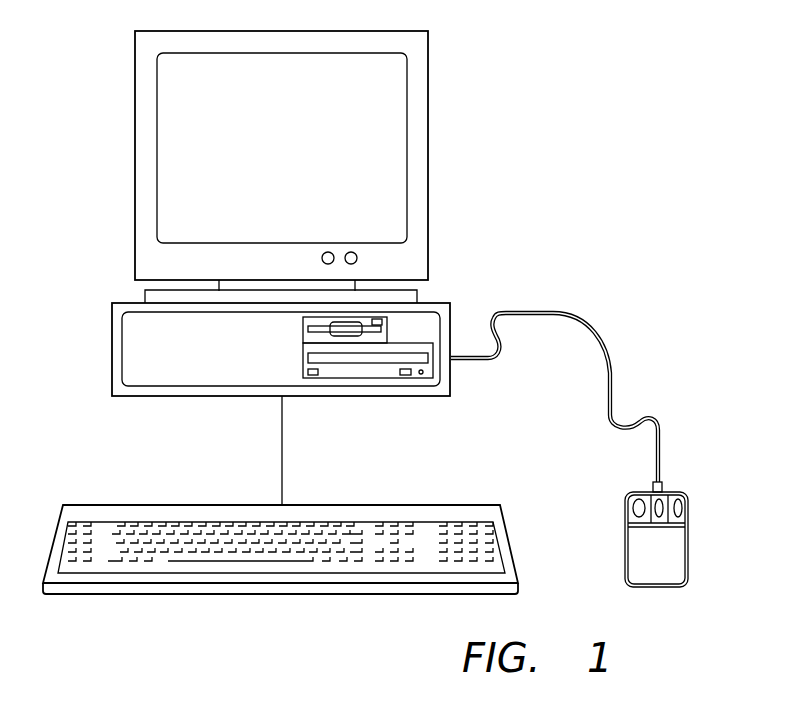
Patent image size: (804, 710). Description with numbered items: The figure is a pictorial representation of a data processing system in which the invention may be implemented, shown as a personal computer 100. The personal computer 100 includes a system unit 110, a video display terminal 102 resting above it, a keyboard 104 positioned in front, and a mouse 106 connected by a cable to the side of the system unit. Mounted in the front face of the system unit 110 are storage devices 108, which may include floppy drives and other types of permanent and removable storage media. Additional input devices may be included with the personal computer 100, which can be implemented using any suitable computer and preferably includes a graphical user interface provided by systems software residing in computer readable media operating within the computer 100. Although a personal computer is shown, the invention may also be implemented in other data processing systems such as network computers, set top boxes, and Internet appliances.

The personal computer 100 is at (604, 76).
The video display terminal 102 is at (428, 157).
The keyboard 104 is at (282, 594).
The mouse 106 is at (688, 548).
The storage devices 108 is at (300, 359).
The system unit 110 is at (358, 396).